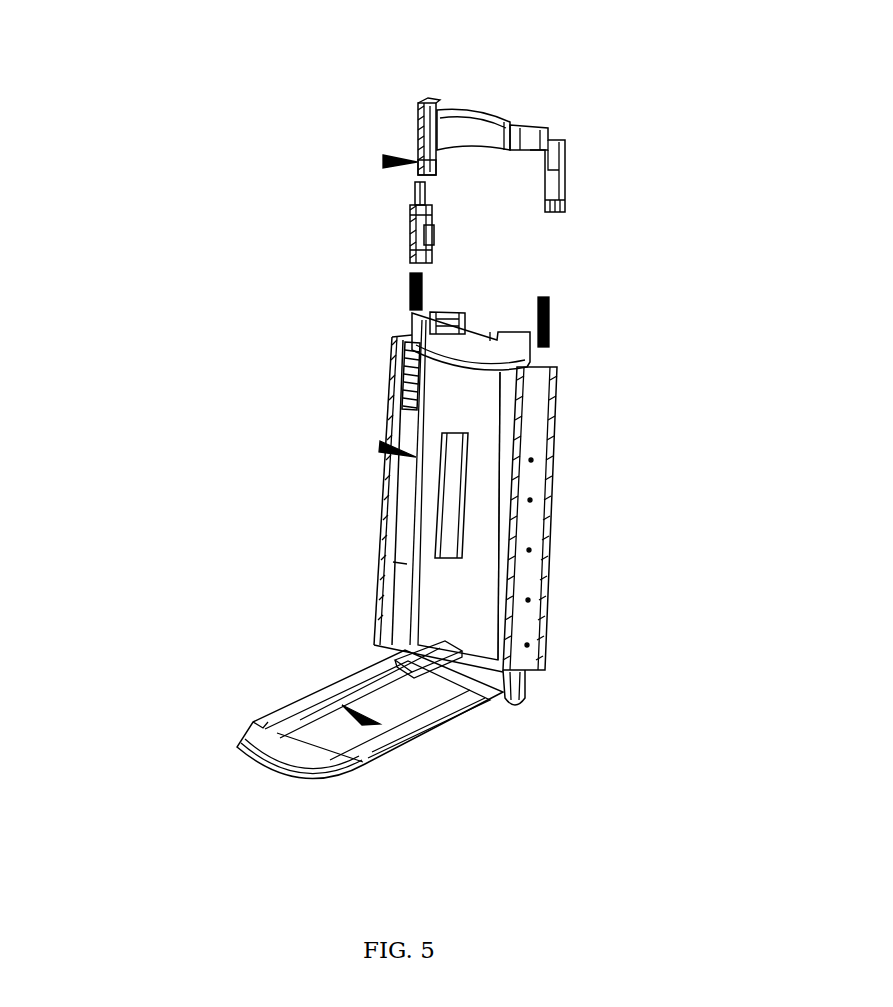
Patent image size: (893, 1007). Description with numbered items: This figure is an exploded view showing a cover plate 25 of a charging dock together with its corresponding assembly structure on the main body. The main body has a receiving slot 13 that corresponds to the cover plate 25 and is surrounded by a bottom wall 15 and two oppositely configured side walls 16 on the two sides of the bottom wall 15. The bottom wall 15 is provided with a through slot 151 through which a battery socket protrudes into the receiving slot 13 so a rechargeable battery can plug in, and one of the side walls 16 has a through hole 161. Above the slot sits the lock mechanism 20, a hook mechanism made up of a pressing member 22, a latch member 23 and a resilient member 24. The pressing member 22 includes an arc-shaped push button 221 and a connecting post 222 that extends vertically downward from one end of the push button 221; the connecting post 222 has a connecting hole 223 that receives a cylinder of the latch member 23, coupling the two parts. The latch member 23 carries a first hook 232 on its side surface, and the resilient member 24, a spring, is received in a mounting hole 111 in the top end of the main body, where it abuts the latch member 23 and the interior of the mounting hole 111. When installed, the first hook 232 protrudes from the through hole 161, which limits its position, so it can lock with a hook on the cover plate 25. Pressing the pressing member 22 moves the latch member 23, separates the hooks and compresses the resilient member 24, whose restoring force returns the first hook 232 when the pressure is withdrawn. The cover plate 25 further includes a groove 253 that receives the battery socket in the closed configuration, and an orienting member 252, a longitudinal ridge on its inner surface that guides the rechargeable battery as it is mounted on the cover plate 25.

The lock mechanism 20 is at (88, 278).
The pressing member 22 is at (170, 165).
The push button 221 is at (472, 110).
The connecting post 222 is at (422, 143).
The connecting hole 223 is at (383, 158).
The latch member 23 is at (413, 227).
The first hook 232 is at (436, 238).
The resilient member 24 is at (410, 305).
The receiving slot 13 is at (382, 446).
The through hole 161 is at (410, 395).
The side wall 16 is at (405, 563).
The bottom wall 15 is at (447, 610).
The through slot 151 is at (440, 521).
The mounting hole 111 is at (548, 365).
The cover plate 25 is at (365, 762).
The orienting member 252 is at (412, 670).
The groove 253 is at (353, 737).